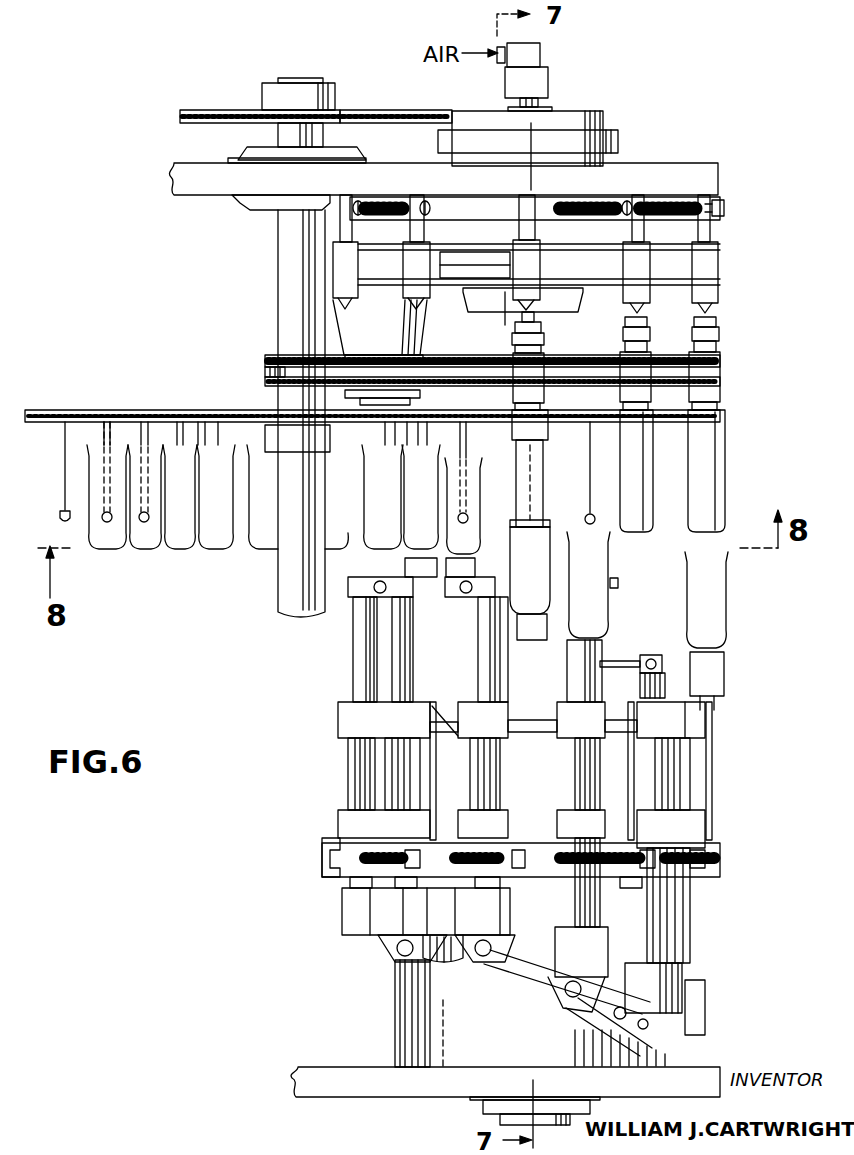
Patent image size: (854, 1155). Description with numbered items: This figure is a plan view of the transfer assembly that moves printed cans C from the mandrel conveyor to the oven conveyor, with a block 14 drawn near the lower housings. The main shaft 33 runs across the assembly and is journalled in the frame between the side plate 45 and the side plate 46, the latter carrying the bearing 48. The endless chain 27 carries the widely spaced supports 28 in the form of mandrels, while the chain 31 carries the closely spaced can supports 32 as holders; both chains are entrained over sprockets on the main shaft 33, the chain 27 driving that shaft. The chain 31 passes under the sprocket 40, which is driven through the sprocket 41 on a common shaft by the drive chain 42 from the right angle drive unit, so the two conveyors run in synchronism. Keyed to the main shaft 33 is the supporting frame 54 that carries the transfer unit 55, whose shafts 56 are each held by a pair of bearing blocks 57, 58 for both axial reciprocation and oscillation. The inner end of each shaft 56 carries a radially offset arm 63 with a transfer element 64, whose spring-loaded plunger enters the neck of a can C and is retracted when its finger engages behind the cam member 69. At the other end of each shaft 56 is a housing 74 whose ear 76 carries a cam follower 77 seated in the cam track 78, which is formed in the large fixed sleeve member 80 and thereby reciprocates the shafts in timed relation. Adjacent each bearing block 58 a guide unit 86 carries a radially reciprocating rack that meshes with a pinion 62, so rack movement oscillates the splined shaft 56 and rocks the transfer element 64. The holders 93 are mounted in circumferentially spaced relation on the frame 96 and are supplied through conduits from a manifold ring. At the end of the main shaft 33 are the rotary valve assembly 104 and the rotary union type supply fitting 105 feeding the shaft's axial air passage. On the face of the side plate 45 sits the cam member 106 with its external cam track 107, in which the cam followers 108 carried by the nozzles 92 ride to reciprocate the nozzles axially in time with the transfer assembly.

The block 14 is at (597, 950).
The endless chain 27 is at (606, 368).
The supports 28 is at (712, 455).
The chain 31 is at (137, 412).
The can supports 32 is at (588, 463).
The main shaft 33 is at (507, 332).
The sprocket 40 is at (228, 412).
The sprocket 41 is at (232, 112).
The drive chain 42 is at (430, 112).
The side plate 45 is at (192, 180).
The side plate 46 is at (310, 1070).
The bearing 48 is at (574, 1100).
The supporting frame 54 is at (440, 705).
The transfer unit 55 is at (708, 790).
The shafts 56 is at (650, 900).
The bearing block 57 is at (338, 717).
The bearing block 58 is at (338, 816).
The pinion 62 is at (552, 868).
The radially offset arm 63 is at (679, 687).
The transfer element 64 is at (725, 670).
The cam member 69 is at (616, 585).
The housing 74 is at (342, 903).
The ear 76 is at (665, 999).
The cam follower 77 is at (505, 963).
The cam track 78 is at (590, 1008).
The sleeve member 80 is at (412, 1025).
The guide unit 86 is at (322, 848).
The nozzles 92 is at (716, 305).
The holders 93 is at (372, 290).
The frame 96 is at (443, 288).
The rotary valve assembly 104 is at (620, 138).
The rotary union type supply fitting 105 is at (548, 75).
The cam member 106 is at (688, 196).
The cam track 107 is at (724, 210).
The cam followers 108 is at (356, 198).
The cans C is at (237, 548).